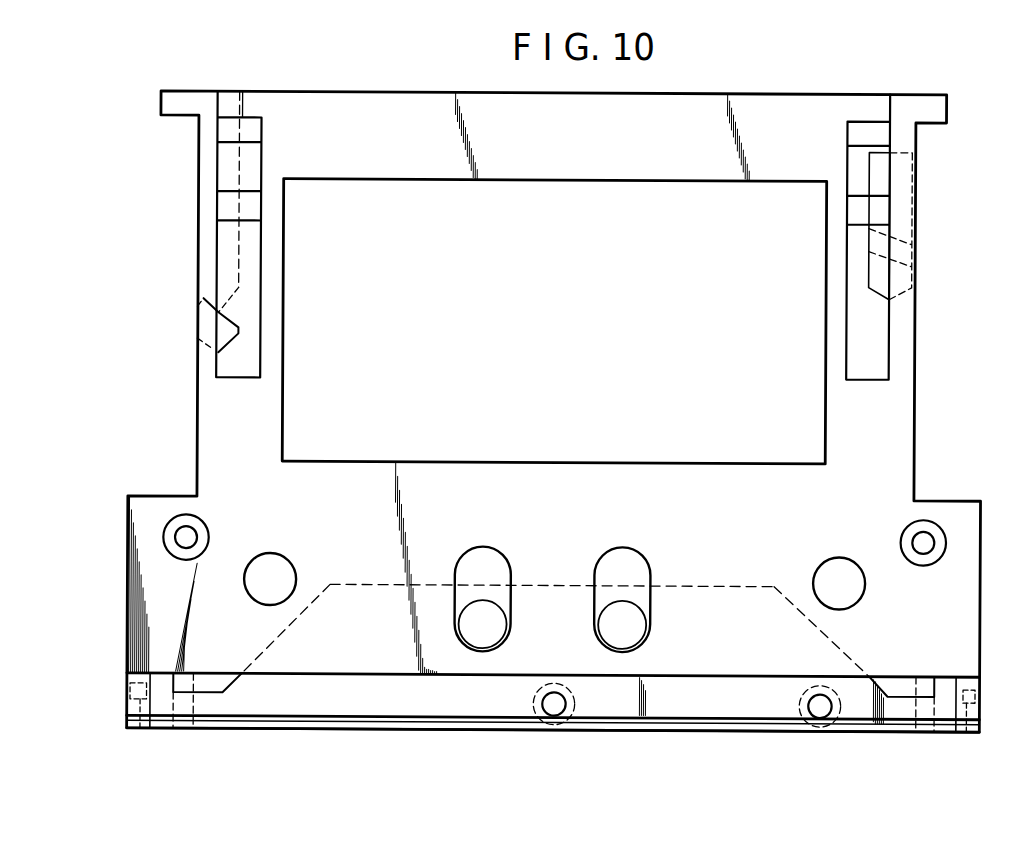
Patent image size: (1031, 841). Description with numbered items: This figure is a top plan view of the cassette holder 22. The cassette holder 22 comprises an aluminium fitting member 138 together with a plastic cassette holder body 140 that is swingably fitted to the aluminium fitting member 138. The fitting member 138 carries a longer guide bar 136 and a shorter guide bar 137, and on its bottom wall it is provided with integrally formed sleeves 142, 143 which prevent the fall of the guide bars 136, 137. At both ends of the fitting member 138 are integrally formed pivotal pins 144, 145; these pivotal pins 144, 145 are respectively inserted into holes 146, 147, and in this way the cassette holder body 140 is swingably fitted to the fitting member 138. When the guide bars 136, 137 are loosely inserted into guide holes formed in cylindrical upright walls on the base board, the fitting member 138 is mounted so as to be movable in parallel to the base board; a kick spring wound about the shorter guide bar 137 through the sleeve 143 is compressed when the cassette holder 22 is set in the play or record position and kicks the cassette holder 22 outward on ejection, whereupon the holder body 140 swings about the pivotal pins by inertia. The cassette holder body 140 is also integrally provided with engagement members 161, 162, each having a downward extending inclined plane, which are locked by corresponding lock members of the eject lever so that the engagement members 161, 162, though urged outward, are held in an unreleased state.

The cassette holder 22 is at (416, 731).
The longer guide bar 136 is at (560, 716).
The shorter guide bar 137 is at (822, 717).
The aluminium fitting member 138 is at (676, 712).
The cassette holder body 140 is at (968, 583).
The sleeve 142 is at (577, 701).
The sleeve 143 is at (800, 700).
The pivotal pin 144 is at (967, 733).
The pivotal pin 145 is at (141, 733).
The hole 146 is at (977, 696).
The hole 147 is at (129, 695).
The engagement member 161 is at (911, 243).
The engagement member 162 is at (229, 334).